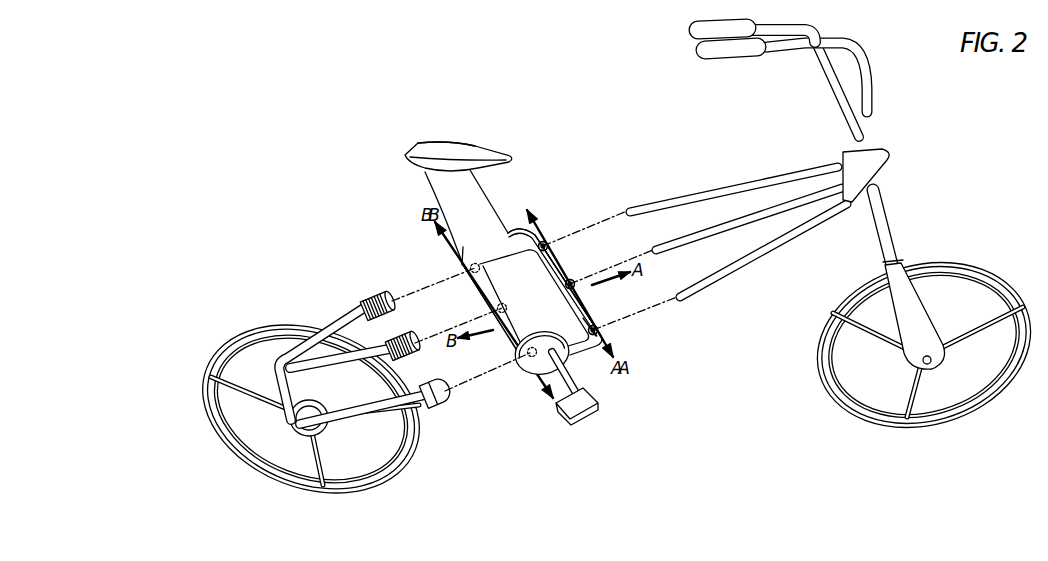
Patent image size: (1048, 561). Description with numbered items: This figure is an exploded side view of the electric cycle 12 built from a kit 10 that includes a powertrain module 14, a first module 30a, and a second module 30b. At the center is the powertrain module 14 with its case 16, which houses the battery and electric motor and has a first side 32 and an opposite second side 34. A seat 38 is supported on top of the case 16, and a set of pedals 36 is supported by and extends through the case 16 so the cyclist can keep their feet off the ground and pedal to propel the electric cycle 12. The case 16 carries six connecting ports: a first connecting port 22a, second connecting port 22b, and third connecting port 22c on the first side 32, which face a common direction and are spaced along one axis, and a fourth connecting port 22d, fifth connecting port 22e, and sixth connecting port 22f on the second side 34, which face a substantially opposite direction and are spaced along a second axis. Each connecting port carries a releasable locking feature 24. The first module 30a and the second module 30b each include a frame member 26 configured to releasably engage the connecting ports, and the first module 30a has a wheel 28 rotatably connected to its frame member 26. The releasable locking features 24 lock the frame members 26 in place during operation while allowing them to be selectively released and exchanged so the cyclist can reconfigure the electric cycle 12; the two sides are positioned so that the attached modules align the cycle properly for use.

The kit 10 is at (259, 57).
The electric cycle 12 is at (349, 130).
The powertrain module 14 is at (473, 152).
The case 16 is at (518, 238).
The first connecting port 22a is at (547, 242).
The second connecting port 22b is at (574, 281).
The third connecting port 22c is at (598, 355).
The fourth connecting port 22d is at (471, 269).
The fifth connecting port 22e is at (498, 309).
The sixth connecting port 22f is at (531, 360).
The releasable locking feature 24 is at (548, 246).
The frame member 26 is at (343, 312).
The wheel 28 is at (386, 470).
The first module 30a is at (888, 168).
The second module 30b is at (205, 384).
The first side 32 is at (583, 318).
The second side 34 is at (507, 343).
The set of pedals 36 is at (578, 418).
The seat 38 is at (438, 147).